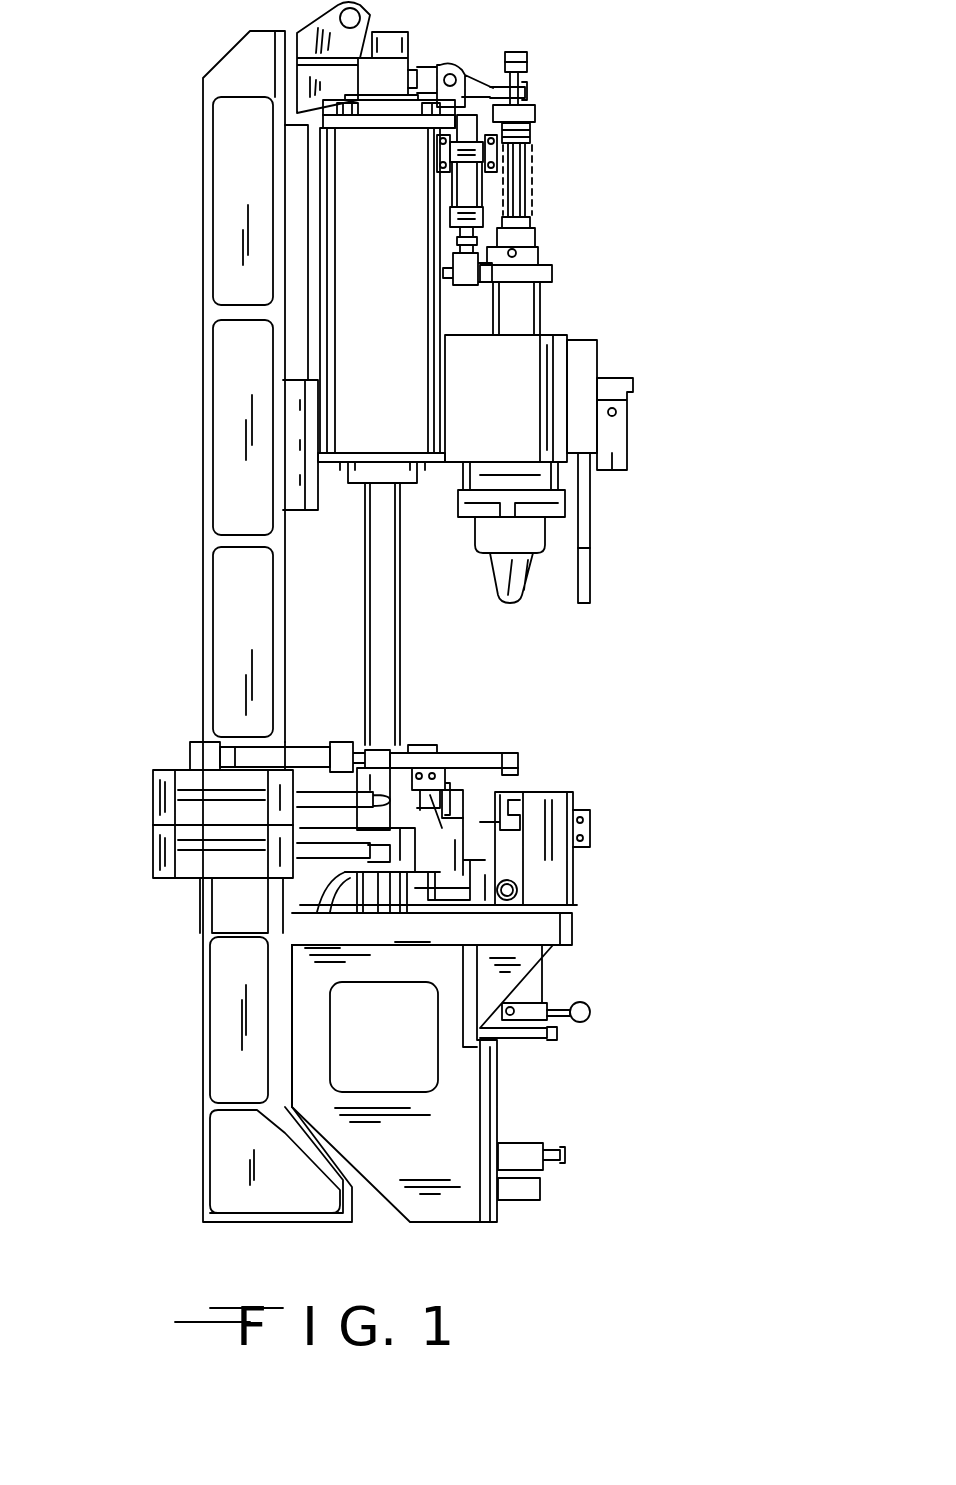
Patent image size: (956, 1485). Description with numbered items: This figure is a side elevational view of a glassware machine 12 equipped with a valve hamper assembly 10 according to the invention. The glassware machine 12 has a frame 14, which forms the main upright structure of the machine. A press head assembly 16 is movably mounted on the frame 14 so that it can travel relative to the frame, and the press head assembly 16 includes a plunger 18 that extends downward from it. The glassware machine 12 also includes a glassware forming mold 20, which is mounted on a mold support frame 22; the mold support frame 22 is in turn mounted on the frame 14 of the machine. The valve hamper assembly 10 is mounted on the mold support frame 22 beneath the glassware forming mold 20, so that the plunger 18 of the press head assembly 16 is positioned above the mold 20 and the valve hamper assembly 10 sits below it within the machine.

The valve hamper assembly 10 is at (601, 990).
The glassware machine 12 is at (203, 229).
The frame 14 is at (203, 360).
The press head assembly 16 is at (565, 337).
The plunger 18 is at (493, 588).
The glassware forming mold 20 is at (577, 869).
The mold support frame 22 is at (310, 963).